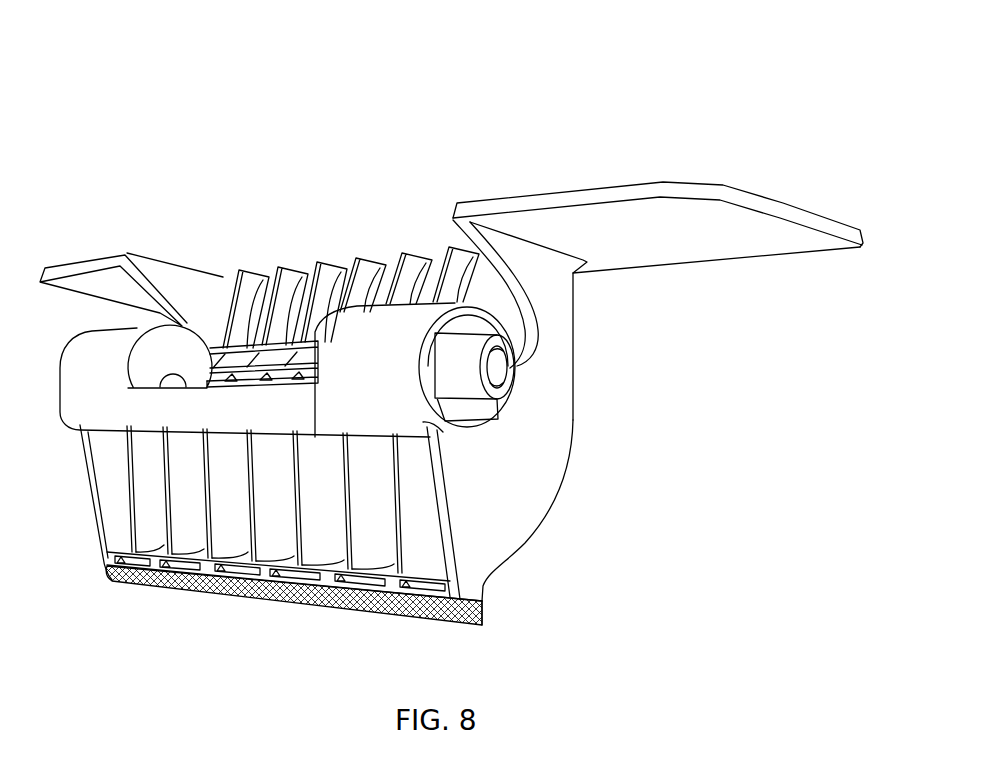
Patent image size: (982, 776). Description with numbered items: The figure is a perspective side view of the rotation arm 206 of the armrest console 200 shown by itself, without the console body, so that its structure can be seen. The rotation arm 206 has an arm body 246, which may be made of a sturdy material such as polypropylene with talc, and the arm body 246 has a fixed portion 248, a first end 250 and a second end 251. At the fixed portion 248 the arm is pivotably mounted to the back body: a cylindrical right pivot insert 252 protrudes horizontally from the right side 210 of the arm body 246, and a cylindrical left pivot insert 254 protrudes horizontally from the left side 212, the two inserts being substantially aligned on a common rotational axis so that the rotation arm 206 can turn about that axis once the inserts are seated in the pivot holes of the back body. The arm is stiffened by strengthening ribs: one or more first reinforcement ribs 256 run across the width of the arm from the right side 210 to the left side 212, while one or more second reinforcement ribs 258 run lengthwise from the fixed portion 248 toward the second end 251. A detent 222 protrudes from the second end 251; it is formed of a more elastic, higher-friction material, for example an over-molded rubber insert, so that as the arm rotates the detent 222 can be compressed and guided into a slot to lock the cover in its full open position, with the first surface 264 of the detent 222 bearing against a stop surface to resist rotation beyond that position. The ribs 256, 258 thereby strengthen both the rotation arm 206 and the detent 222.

The air discharge assembly 200 is at (438, 58).
The rotation arm 206 is at (545, 204).
The right side 210 is at (44, 270).
The left side 212 is at (803, 217).
The detent 222 is at (483, 600).
The arm body 246 is at (558, 310).
The fixed portion 248 is at (367, 330).
The first end 250 is at (752, 248).
The second end 251 is at (487, 568).
The right pivot insert 252 is at (170, 373).
The left pivot insert 254 is at (508, 381).
The first reinforcement ribs 256 is at (137, 582).
The second reinforcement ribs 258 is at (193, 533).
The first surface 264 is at (423, 616).